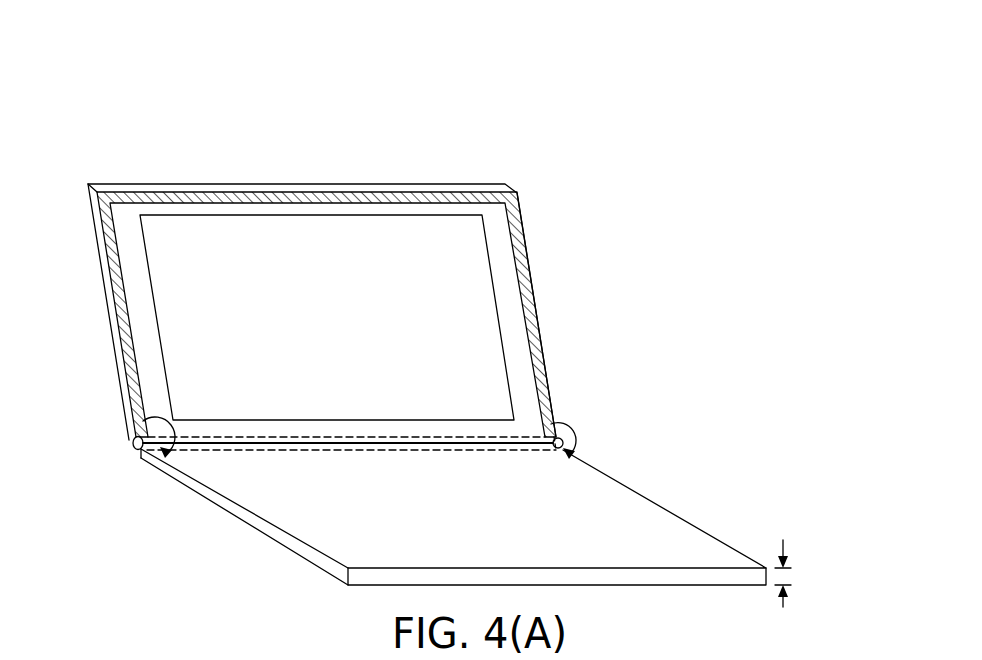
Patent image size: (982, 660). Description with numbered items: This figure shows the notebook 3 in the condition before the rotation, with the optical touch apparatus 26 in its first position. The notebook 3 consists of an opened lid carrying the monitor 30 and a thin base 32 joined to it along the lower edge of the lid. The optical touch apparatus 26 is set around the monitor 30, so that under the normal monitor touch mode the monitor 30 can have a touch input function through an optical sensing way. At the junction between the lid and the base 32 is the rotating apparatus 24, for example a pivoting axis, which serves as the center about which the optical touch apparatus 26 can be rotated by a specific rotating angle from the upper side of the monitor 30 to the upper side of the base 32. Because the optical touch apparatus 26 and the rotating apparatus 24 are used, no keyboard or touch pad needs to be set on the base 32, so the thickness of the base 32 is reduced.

The notebook 3 is at (444, 349).
The rotating apparatus 24 is at (133, 445).
The optical touch apparatus 26 is at (523, 274).
The monitor 30 is at (240, 224).
The base 32 is at (284, 538).